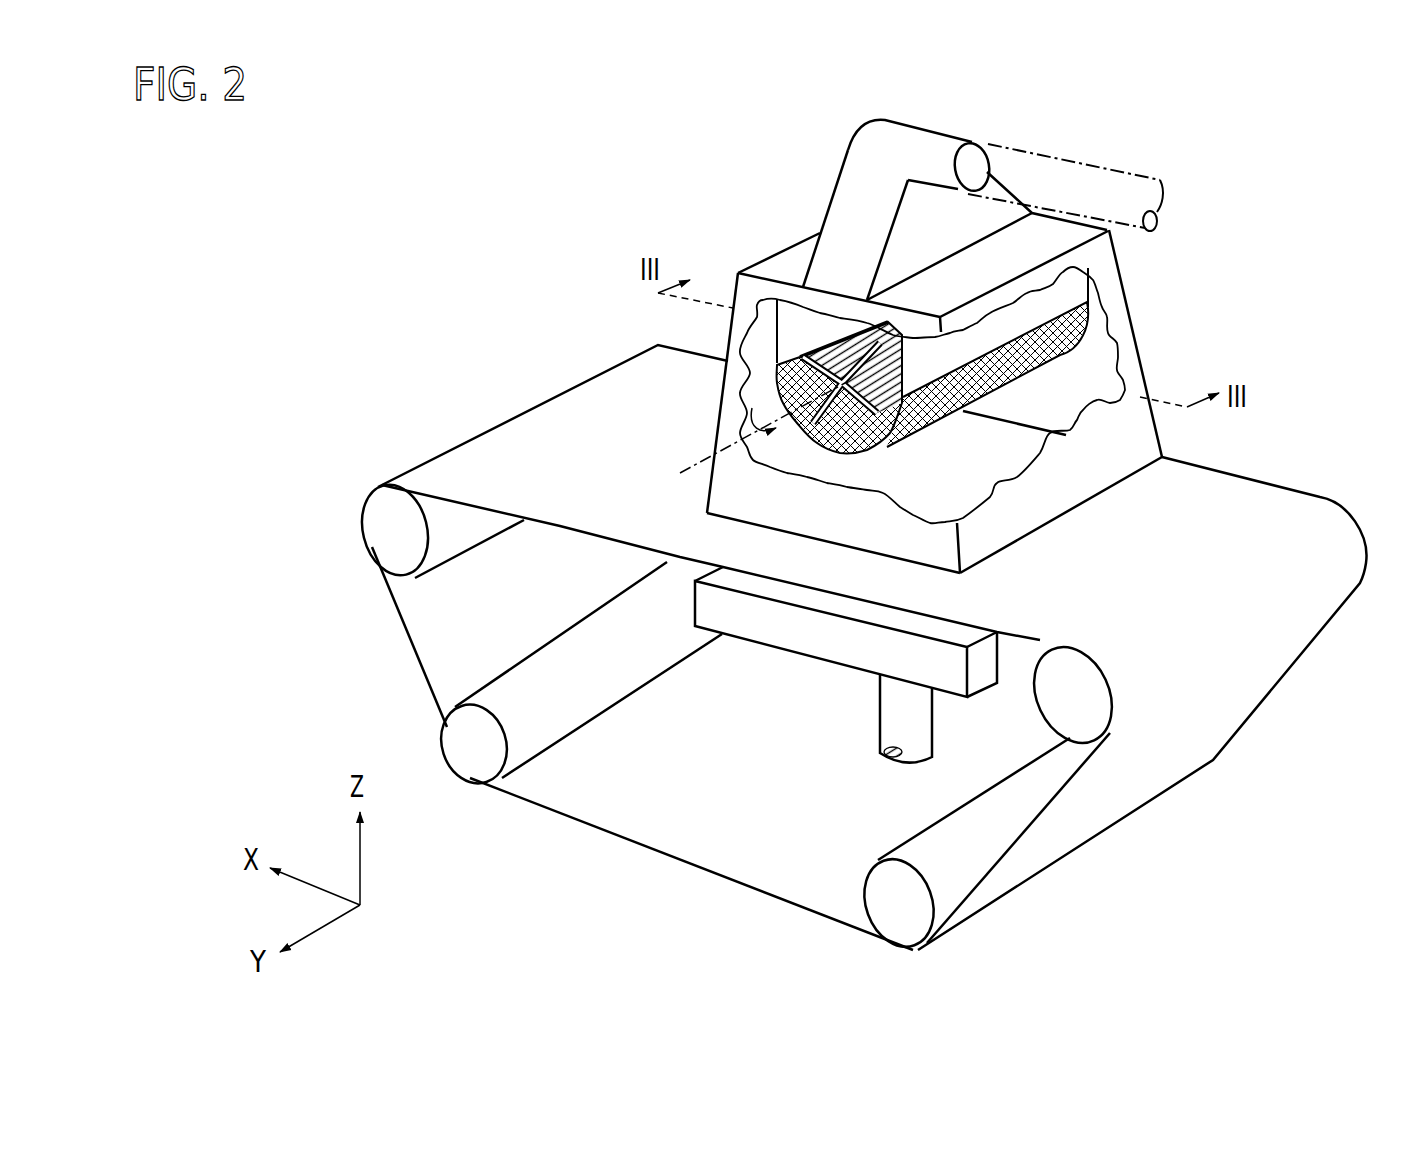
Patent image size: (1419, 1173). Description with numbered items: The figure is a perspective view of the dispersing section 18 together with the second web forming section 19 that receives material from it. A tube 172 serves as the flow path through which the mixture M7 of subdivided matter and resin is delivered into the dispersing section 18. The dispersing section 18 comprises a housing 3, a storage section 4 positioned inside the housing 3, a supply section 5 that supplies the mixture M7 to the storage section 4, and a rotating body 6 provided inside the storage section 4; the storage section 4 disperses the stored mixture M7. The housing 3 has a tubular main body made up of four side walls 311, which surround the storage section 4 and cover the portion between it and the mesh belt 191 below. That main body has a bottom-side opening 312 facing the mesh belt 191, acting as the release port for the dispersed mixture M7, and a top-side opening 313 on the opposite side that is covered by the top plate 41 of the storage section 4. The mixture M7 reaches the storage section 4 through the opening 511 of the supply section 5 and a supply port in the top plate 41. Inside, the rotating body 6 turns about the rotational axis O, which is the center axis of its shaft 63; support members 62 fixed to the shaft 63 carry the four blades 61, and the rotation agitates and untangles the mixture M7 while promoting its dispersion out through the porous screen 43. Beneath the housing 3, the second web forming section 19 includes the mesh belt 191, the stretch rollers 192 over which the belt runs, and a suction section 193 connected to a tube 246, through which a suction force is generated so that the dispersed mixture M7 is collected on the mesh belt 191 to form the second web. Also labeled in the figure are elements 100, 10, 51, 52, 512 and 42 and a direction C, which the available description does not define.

The three-dimensional shaping apparatus 100 is at (298, 206).
The shaping unit 10 is at (514, 175).
The dispersing section 18 is at (1244, 173).
The second web forming section 19 is at (709, 879).
The mesh belt 191 is at (1270, 490).
The stretch rollers 192 is at (460, 752).
The suction section 193 is at (792, 638).
The tube 246 is at (890, 708).
The housing 3 is at (1136, 432).
The side walls 311 is at (723, 482).
The bottom-side opening 312 is at (728, 523).
The top-side opening 313 is at (1110, 236).
The opening 511 is at (967, 259).
The arm side surface 512 is at (913, 247).
The supply section 5 is at (850, 134).
The arm portion 51 is at (846, 167).
The shaft 52 is at (961, 142).
The tube 172 is at (1148, 172).
The mixture M7 is at (1000, 174).
The storage section 4 is at (766, 357).
The top plate 41 is at (794, 263).
The filling material 42 is at (752, 322).
The porous screen 43 is at (1085, 322).
The rotating body 6 is at (814, 344).
The blades 61 is at (877, 404).
The support members 62 is at (823, 407).
The shaft 63 is at (847, 417).
The rotational axis O is at (703, 450).
The rotation direction C is at (764, 414).